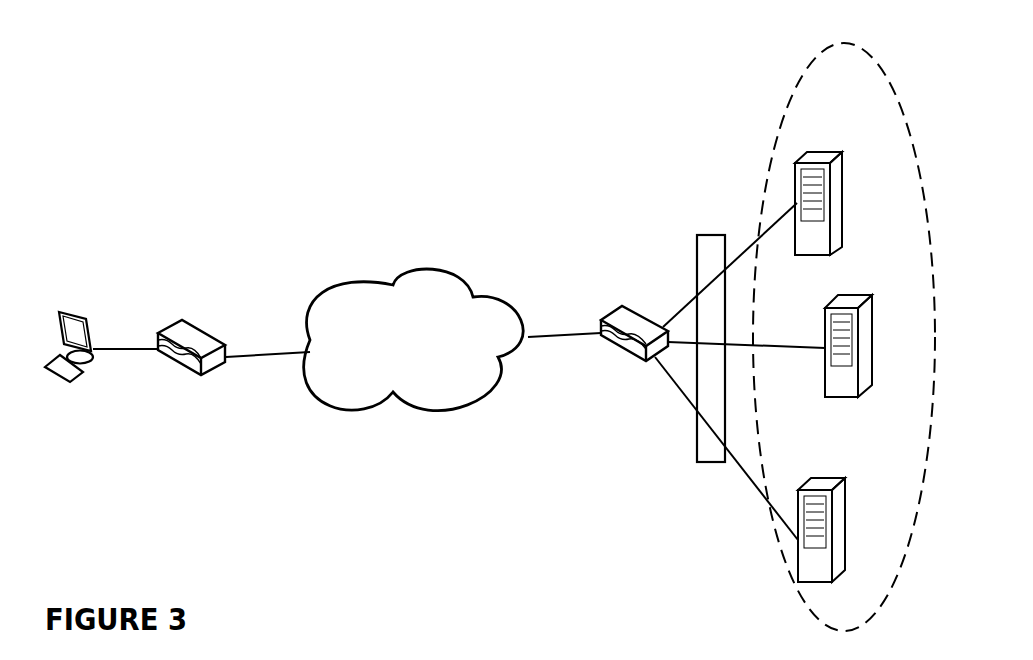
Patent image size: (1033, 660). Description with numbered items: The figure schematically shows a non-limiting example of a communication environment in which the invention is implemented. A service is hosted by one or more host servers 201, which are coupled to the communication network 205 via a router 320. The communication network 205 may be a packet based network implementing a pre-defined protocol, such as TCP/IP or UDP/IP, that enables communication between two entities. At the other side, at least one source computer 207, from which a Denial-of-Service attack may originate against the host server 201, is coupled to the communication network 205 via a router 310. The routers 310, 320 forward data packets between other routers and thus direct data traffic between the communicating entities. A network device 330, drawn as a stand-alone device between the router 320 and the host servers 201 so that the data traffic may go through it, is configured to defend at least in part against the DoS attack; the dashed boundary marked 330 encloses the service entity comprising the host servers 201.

The source computer 207 is at (84, 317).
The router 310 is at (198, 328).
The communication network 205 is at (442, 271).
The router 320 is at (622, 303).
The network device 330 is at (709, 235).
The host server 201 is at (835, 152).